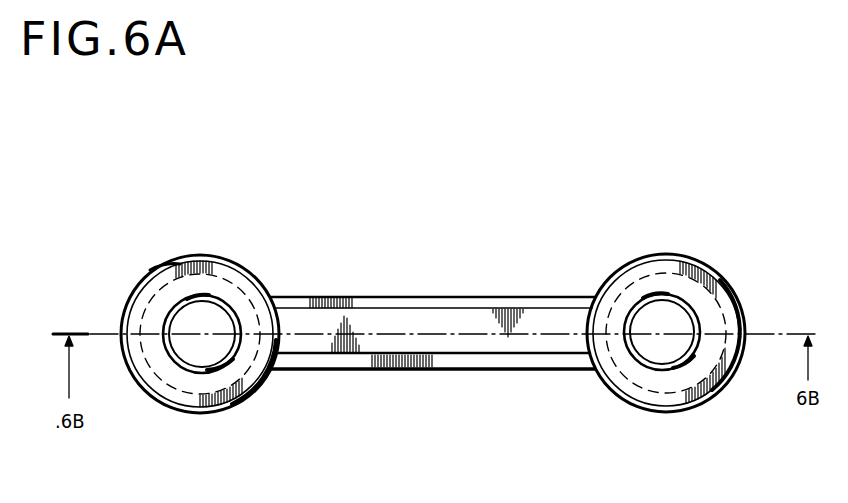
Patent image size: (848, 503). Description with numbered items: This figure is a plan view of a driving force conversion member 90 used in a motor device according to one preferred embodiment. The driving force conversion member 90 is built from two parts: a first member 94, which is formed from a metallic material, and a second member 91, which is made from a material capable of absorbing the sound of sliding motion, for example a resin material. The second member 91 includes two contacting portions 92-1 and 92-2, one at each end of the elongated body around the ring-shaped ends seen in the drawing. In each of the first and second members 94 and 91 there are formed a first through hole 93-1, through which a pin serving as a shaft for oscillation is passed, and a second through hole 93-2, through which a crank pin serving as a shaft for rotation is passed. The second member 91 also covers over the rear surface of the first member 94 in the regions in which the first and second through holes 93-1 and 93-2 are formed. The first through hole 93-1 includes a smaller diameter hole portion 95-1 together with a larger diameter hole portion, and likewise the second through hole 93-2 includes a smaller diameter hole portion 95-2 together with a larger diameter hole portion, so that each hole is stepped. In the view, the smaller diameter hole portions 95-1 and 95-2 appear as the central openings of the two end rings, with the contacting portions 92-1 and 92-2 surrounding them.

The driving force conversion member 90 is at (163, 262).
The second member 91 is at (389, 320).
The contacting portion 92-1 is at (249, 309).
The contacting portion 92-2 is at (620, 301).
The first through hole 93-1 is at (182, 390).
The second through hole 93-2 is at (707, 395).
The first member 94 is at (445, 298).
The smaller diameter hole portion 95-1 is at (198, 353).
The smaller diameter hole portion 95-2 is at (672, 345).